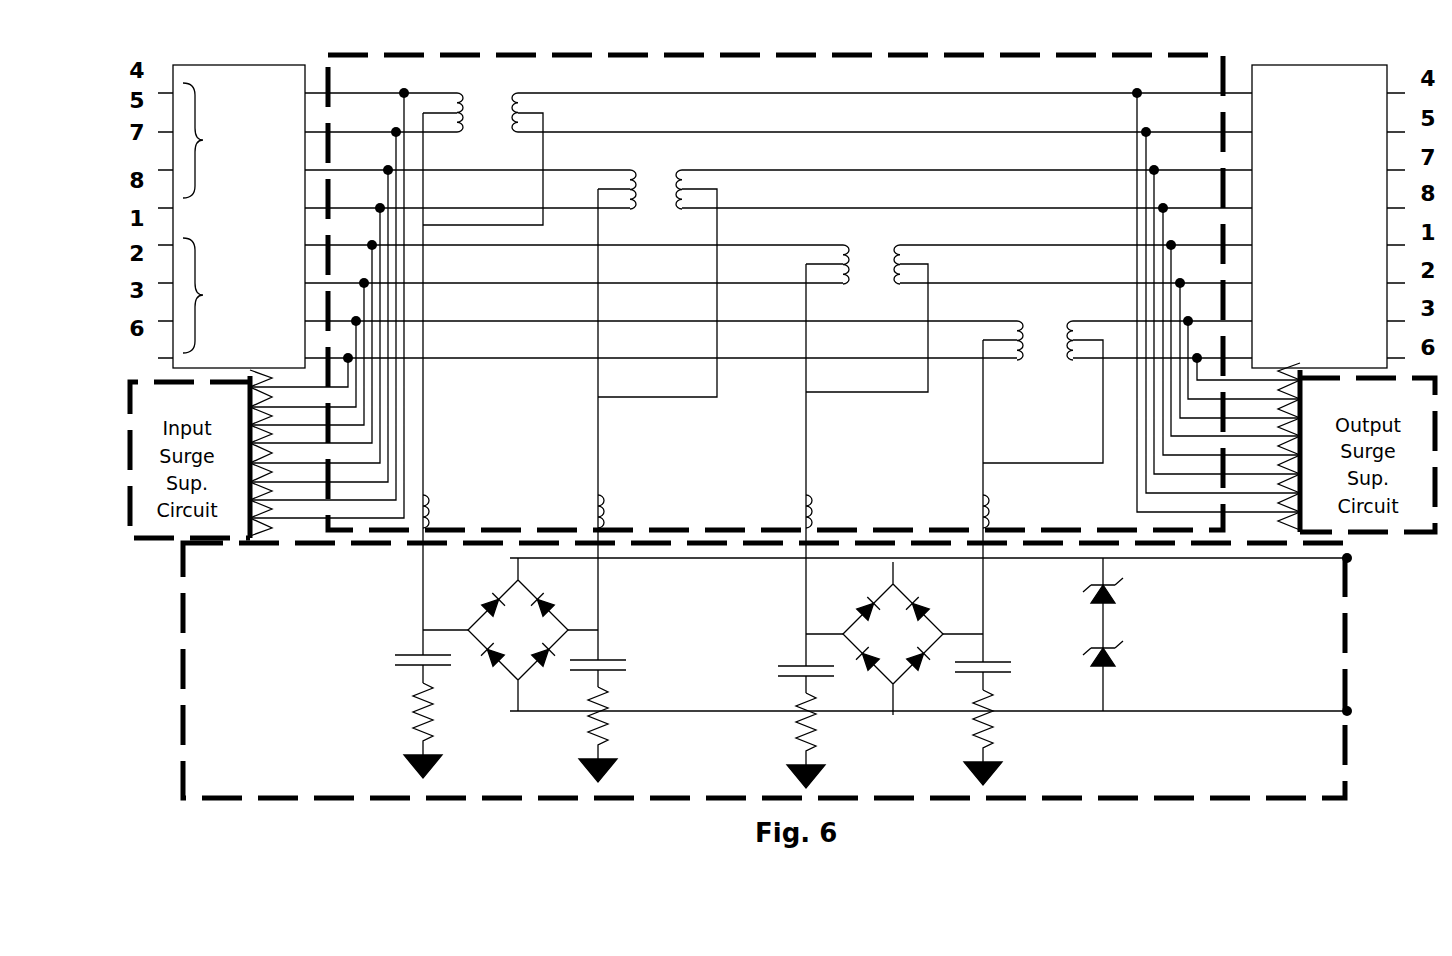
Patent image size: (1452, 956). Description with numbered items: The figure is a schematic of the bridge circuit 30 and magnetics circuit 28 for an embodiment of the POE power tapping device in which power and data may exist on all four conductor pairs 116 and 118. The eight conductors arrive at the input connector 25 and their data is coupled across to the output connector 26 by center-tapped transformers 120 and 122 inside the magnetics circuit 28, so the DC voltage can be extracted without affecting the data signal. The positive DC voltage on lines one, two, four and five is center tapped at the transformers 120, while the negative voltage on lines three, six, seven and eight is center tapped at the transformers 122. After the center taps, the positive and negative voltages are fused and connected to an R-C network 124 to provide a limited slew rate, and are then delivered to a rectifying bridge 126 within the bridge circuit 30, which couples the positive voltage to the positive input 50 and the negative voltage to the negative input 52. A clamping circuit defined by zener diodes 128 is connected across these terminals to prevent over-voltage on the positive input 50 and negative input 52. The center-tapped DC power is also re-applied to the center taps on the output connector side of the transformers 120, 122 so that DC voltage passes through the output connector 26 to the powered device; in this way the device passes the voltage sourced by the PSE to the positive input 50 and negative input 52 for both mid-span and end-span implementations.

The input connector 25 is at (239, 216).
The output connector 26 is at (1319, 216).
The magnetics circuit 28 is at (775, 292).
The bridge circuit 30 is at (764, 670).
The positive input 50 is at (1239, 573).
The negative input 52 is at (1239, 730).
The conductor pairs 116 is at (227, 140).
The conductor pairs 118 is at (227, 295).
The center-tapped transformer 120 is at (675, 242).
The center-tapped transformer 122 is at (850, 316).
The R-C network 124 is at (732, 735).
The rectifying bridge 126 is at (705, 636).
The zener diodes 128 is at (1088, 634).